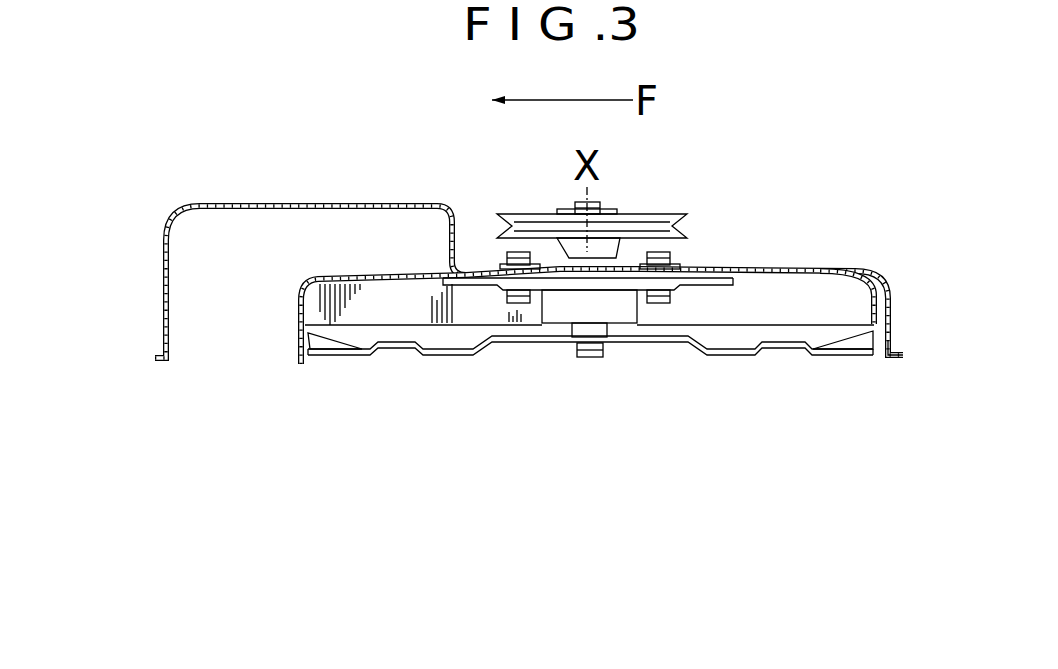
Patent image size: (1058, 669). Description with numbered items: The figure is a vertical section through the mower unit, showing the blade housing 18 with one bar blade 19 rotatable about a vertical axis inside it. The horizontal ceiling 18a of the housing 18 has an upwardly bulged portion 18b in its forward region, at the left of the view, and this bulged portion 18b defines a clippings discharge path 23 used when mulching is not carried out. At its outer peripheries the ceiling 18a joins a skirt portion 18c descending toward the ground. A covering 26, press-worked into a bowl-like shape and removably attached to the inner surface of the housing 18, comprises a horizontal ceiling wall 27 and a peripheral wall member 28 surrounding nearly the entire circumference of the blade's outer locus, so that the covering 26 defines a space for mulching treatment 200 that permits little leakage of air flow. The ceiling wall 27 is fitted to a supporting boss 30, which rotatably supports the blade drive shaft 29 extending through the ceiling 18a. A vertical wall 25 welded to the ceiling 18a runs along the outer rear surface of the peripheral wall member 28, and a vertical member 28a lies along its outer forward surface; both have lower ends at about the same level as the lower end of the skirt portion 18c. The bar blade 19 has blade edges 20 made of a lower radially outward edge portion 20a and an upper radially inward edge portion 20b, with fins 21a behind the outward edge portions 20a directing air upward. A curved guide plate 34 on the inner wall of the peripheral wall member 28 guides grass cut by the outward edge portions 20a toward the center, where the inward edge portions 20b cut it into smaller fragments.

The blade housing 18 is at (862, 268).
The horizontal ceiling 18a is at (750, 270).
The upwardly bulged portion 18b is at (240, 203).
The skirt portion 18c is at (163, 295).
The bar blade 19 is at (718, 357).
The blade edge 20 is at (463, 436).
The radially outward edge portion 20a is at (342, 357).
The radially inward edge portion 20b is at (400, 347).
The fin 21a is at (310, 330).
The clippings discharge path 23 is at (195, 352).
The vertical wall 25 is at (883, 360).
The covering 26 is at (295, 265).
The horizontal ceiling wall 27 is at (378, 277).
The peripheral wall member 28 is at (300, 292).
The vertical member 28a is at (297, 343).
The blade drive shaft 29 is at (607, 327).
The supporting boss 30 is at (560, 312).
The curved guide plate 34 is at (407, 305).
The space for mulching treatment 200 is at (815, 295).